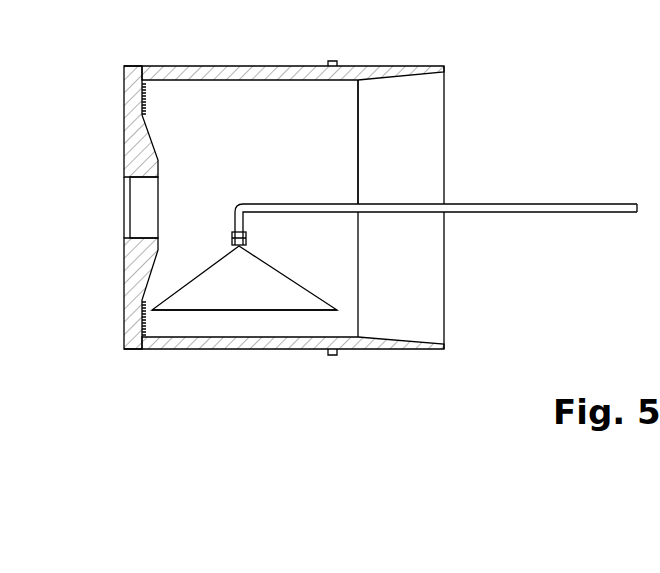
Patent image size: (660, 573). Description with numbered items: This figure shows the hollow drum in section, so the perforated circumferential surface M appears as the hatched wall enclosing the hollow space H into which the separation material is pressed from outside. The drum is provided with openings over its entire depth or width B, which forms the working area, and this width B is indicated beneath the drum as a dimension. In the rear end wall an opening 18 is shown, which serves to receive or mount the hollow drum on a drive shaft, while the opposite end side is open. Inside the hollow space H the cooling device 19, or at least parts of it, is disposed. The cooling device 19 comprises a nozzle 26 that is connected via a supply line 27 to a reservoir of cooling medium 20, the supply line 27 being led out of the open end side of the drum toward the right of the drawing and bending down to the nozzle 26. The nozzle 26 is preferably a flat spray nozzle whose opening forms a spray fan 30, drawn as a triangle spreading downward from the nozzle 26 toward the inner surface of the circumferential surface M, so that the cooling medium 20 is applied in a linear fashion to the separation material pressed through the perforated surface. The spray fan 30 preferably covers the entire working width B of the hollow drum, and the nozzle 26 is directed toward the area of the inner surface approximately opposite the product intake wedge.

The opening 18 is at (146, 207).
The cooling device 19 is at (304, 190).
The cooling medium 20 is at (236, 297).
The nozzle 26 is at (232, 238).
The supply line 27 is at (575, 204).
The spray fan 30 is at (246, 282).
The circumferential surface M is at (223, 63).
The hollow space H is at (305, 118).
The depth or width B is at (337, 400).